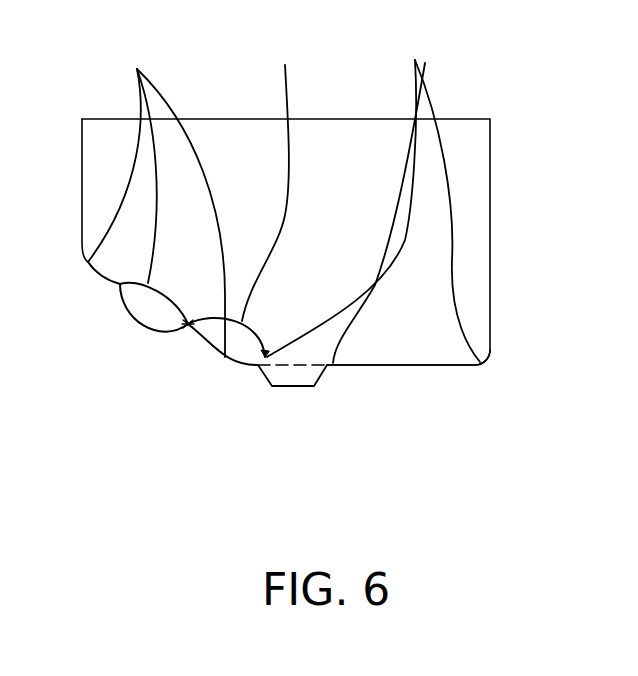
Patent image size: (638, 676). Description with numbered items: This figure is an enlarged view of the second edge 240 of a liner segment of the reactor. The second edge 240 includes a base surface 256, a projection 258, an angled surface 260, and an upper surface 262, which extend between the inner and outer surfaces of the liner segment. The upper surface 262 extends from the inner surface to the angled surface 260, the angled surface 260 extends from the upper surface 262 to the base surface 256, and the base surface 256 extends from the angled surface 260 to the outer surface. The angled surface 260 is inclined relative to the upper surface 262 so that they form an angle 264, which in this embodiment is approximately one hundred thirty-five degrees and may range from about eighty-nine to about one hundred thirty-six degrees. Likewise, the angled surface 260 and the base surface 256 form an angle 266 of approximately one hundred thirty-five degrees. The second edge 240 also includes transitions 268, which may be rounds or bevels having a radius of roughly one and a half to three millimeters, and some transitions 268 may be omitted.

The second edge 240 is at (353, 365).
The base surface 256 is at (422, 365).
The projection 258 is at (292, 378).
The angled surface 260 is at (173, 313).
The upper surface 262 is at (120, 284).
The angle 264 is at (275, 177).
The angle 266 is at (131, 319).
The transitions 268 is at (284, 196).